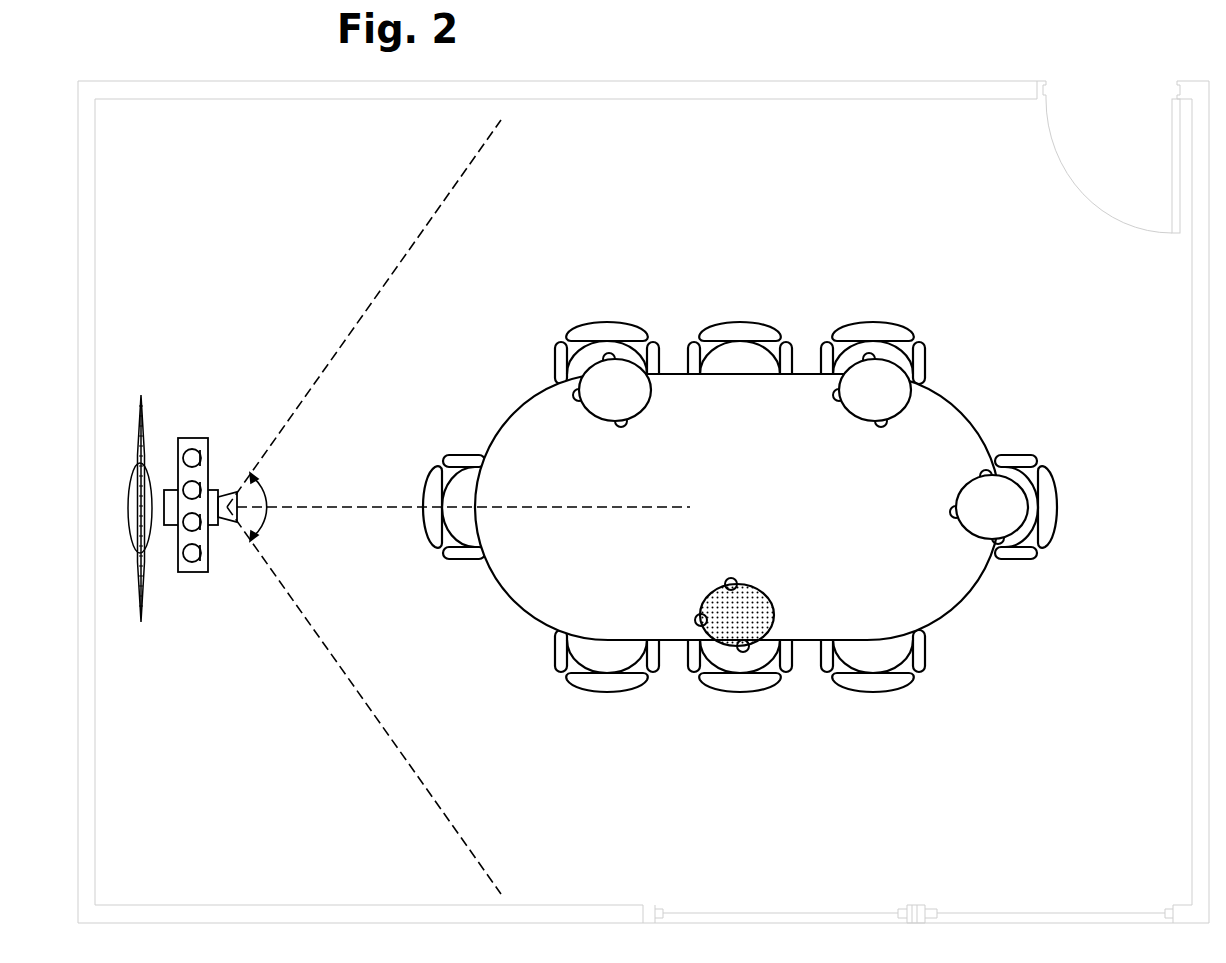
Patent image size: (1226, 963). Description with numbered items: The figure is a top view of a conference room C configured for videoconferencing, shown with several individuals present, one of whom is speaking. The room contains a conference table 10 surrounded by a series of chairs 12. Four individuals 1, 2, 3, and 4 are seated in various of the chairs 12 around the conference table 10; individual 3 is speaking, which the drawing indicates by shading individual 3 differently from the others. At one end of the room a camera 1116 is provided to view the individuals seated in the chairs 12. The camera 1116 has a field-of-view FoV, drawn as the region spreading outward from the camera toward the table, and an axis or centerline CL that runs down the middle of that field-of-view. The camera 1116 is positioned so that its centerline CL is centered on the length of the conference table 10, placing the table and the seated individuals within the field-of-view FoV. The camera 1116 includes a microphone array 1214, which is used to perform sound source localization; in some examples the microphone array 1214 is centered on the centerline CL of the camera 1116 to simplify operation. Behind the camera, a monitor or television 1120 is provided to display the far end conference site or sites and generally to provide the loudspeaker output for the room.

The conference room C is at (833, 81).
The conference table 10 is at (963, 403).
The chairs 12 is at (868, 320).
The individual 1 is at (612, 390).
The individual 2 is at (872, 390).
The individual 3 is at (734, 615).
The individual 4 is at (989, 507).
The camera 1116 is at (219, 523).
The microphone array 1214 is at (188, 438).
The monitor or television 1120 is at (147, 608).
The field-of-view FoV is at (268, 502).
The centerline CL is at (318, 508).